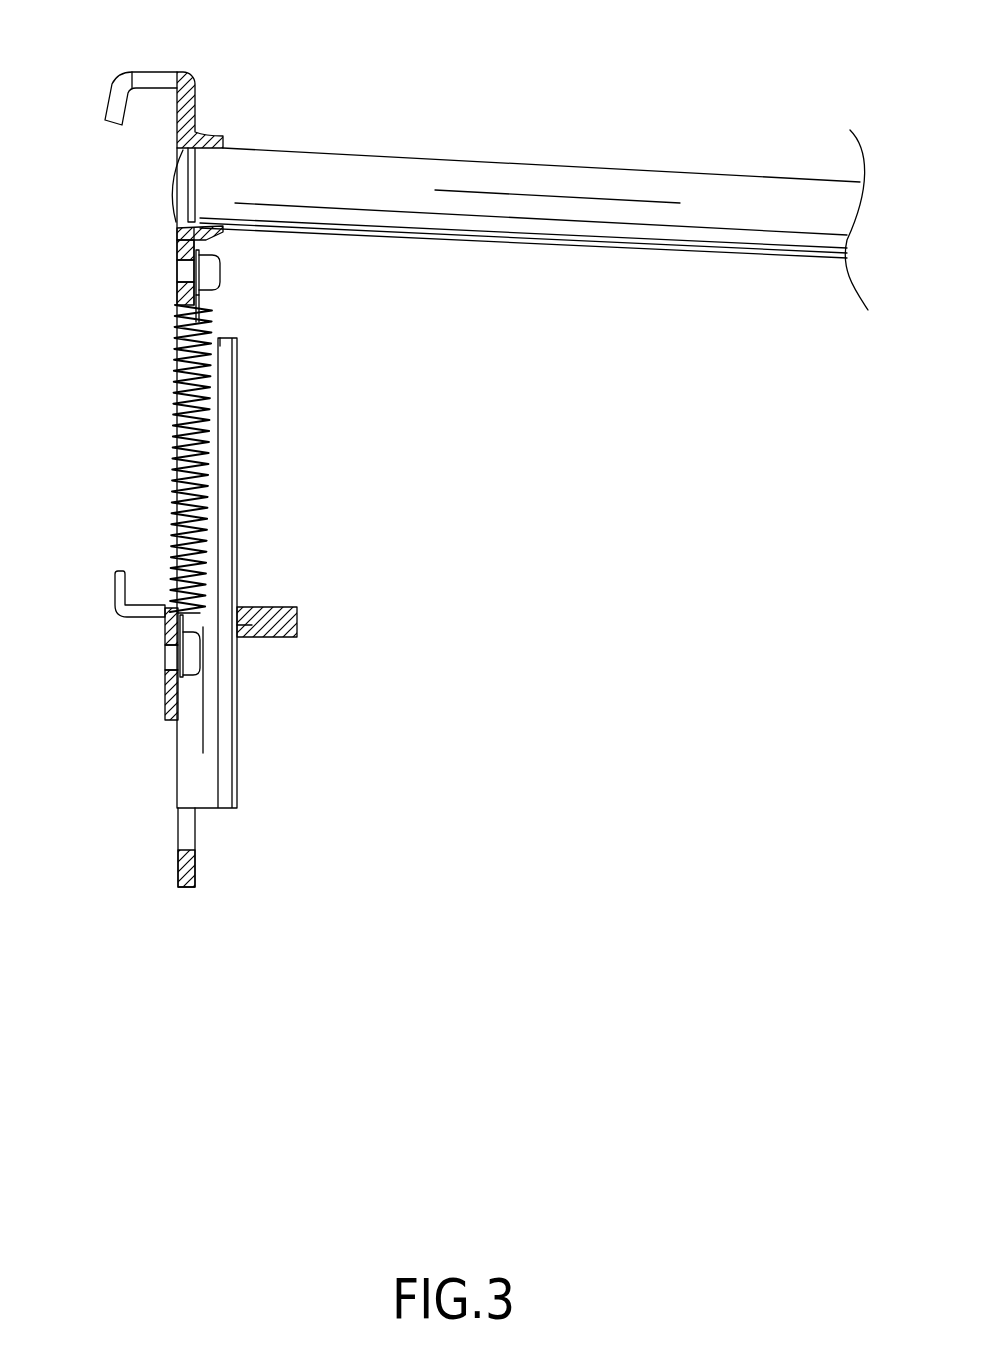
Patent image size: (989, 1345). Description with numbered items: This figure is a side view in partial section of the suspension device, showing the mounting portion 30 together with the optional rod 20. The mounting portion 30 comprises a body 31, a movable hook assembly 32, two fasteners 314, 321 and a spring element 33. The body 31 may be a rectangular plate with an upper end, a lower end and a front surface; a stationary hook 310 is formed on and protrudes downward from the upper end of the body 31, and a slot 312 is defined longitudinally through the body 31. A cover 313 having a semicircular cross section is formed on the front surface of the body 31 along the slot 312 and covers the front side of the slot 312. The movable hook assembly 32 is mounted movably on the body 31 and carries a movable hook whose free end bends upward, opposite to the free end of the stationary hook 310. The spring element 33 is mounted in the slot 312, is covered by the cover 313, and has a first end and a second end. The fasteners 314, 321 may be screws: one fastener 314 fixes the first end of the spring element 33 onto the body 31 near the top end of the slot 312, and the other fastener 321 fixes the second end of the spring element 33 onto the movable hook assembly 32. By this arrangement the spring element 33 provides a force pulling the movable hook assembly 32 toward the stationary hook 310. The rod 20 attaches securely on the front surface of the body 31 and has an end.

The rod 20 is at (632, 148).
The mounting portion 30 is at (195, 66).
The body 31 is at (195, 108).
The stationary hook 310 is at (153, 72).
The slot 312 is at (180, 300).
The cover 313 is at (238, 752).
The fastener 314 is at (178, 270).
The movable hook assembly 32 is at (110, 617).
The fastener 321 is at (167, 648).
The spring element 33 is at (175, 430).